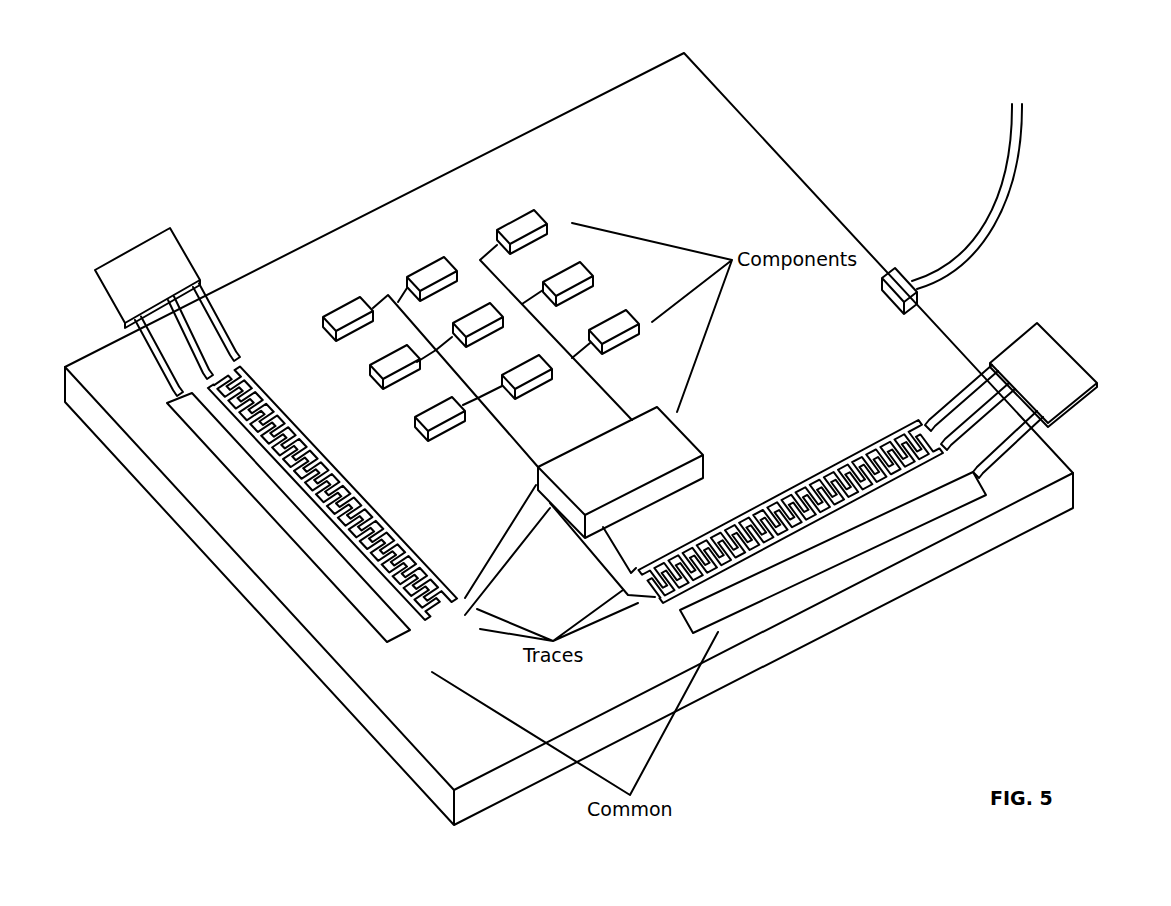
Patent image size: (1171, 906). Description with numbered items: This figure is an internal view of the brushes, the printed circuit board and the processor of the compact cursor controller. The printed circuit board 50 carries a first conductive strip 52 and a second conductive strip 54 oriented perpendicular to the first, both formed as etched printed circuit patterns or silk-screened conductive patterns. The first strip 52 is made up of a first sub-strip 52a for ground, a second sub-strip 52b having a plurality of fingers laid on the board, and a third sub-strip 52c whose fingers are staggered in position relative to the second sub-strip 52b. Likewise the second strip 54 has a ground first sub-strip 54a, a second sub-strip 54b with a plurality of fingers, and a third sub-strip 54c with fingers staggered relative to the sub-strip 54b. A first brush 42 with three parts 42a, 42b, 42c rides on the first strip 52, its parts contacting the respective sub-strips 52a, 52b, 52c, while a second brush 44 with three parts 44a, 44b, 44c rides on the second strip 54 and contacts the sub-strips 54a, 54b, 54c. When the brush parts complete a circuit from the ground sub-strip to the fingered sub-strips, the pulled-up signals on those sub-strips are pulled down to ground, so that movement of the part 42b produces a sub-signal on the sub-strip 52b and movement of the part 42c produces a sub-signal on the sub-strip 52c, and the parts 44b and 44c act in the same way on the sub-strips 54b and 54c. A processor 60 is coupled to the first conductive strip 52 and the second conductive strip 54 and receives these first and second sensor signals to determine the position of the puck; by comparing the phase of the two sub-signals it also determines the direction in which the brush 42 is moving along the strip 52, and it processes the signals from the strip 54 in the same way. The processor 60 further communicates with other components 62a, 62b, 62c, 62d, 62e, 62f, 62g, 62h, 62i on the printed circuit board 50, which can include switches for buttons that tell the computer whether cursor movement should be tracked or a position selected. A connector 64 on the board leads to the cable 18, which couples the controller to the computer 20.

The cable 18 is at (1008, 204).
The computer 20 is at (1060, 95).
The first brush 42 is at (128, 253).
The first brush part 42a is at (160, 372).
The first brush part 42b is at (186, 325).
The first brush part 42c is at (230, 342).
The second brush 44 is at (1078, 365).
The second brush part 44a is at (997, 461).
The second brush part 44b is at (970, 392).
The second brush part 44c is at (938, 407).
The printed circuit board 50 is at (593, 99).
The first conductive strip 52 is at (325, 507).
The first sub-strip 52a is at (388, 645).
The second sub-strip 52b is at (326, 497).
The third sub-strip 52c is at (230, 492).
The second conductive strip 54 is at (781, 530).
The first sub-strip 54a is at (683, 627).
The second sub-strip 54b is at (795, 517).
The third sub-strip 54c is at (798, 587).
The processor 60 is at (686, 428).
The component 62a is at (324, 333).
The component 62b is at (372, 383).
The component 62c is at (428, 437).
The component 62d is at (417, 267).
The component 62e is at (463, 315).
The component 62f is at (507, 363).
The component 62g is at (540, 216).
The component 62h is at (582, 263).
The component 62i is at (628, 312).
The connector 64 is at (886, 268).